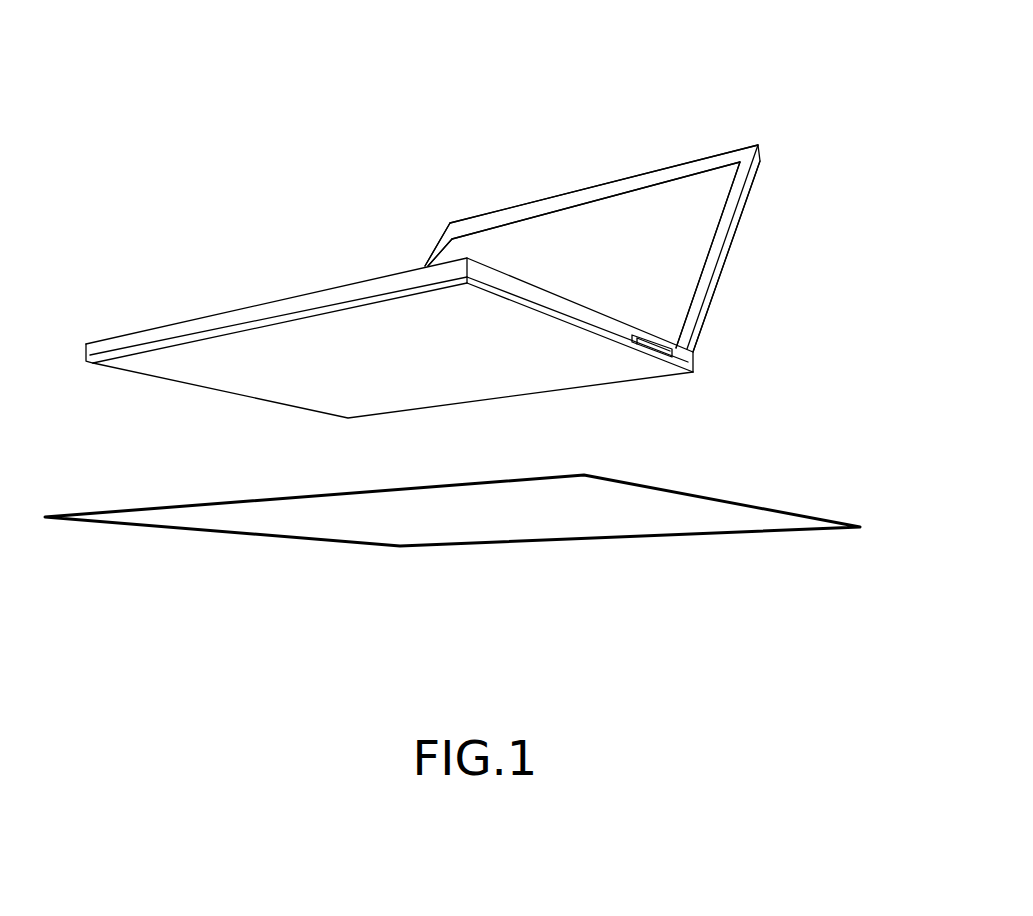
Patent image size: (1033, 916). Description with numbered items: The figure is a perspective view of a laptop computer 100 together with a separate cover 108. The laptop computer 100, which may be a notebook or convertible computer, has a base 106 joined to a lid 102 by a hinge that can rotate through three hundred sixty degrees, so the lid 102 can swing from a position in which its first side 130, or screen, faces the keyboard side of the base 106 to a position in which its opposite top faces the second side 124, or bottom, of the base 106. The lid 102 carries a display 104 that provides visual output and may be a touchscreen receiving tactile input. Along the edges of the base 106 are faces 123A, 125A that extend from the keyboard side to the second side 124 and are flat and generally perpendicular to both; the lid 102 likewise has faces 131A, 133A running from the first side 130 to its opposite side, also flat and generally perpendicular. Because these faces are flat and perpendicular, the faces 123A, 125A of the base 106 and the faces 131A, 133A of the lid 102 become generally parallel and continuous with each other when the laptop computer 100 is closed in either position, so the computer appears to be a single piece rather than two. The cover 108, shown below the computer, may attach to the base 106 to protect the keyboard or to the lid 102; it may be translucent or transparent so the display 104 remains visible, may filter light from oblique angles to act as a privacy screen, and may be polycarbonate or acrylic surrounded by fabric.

The laptop computer 100 is at (360, 112).
The lid 102 is at (650, 170).
The display 104 is at (625, 270).
The base 106 is at (293, 300).
The cover 108 is at (400, 548).
The face 123A is at (587, 316).
The second side 124 is at (255, 416).
The face 125A is at (398, 283).
The first side 130 is at (505, 249).
The face 131A is at (743, 202).
The face 133A is at (683, 163).